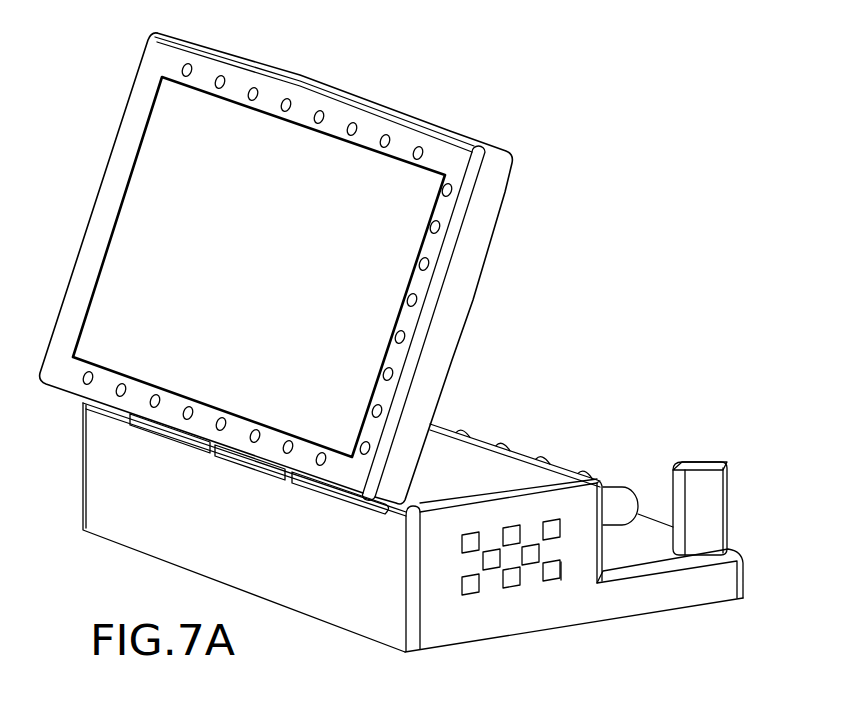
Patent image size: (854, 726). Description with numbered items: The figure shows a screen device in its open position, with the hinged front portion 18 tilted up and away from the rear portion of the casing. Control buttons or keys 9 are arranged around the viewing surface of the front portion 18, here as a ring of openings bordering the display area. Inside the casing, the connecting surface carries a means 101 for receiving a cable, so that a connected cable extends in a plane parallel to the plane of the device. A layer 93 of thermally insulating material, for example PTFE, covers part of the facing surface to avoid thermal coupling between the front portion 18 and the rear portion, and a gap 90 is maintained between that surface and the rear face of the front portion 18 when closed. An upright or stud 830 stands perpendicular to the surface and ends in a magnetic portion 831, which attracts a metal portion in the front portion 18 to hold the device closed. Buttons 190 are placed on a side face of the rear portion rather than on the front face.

The control buttons or keys 9 is at (352, 127).
The front portion 18 is at (495, 177).
The layer of thermally insulating material 93 is at (470, 456).
The gap 90 is at (662, 470).
The means for receiving cables 101 is at (615, 492).
The upright or stud 830 is at (710, 498).
The magnetic portion 831 is at (693, 461).
The buttons 190 is at (518, 580).